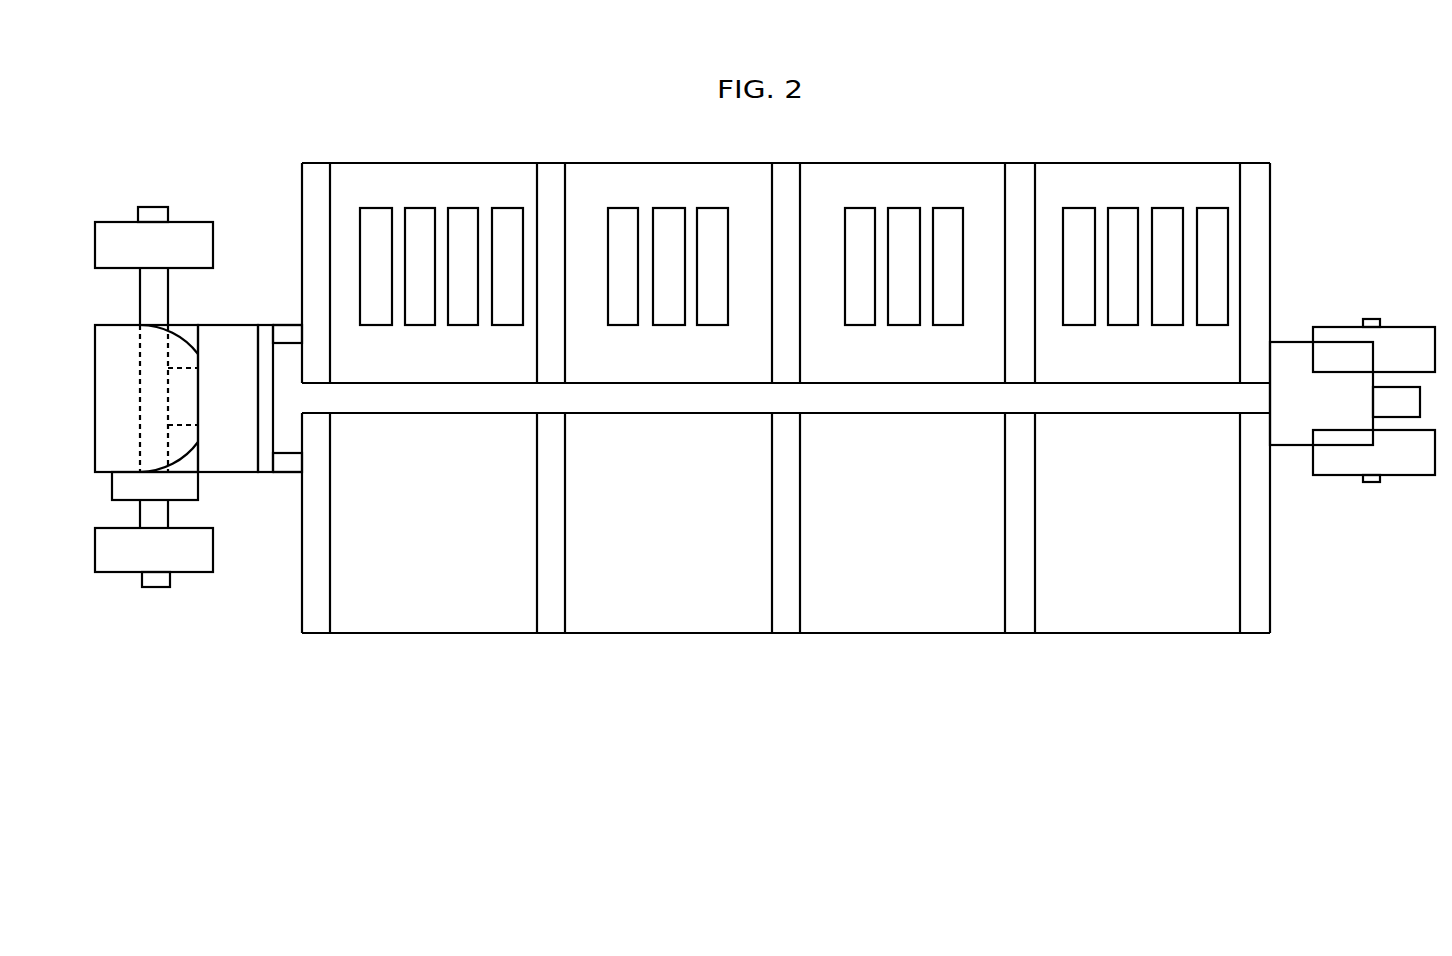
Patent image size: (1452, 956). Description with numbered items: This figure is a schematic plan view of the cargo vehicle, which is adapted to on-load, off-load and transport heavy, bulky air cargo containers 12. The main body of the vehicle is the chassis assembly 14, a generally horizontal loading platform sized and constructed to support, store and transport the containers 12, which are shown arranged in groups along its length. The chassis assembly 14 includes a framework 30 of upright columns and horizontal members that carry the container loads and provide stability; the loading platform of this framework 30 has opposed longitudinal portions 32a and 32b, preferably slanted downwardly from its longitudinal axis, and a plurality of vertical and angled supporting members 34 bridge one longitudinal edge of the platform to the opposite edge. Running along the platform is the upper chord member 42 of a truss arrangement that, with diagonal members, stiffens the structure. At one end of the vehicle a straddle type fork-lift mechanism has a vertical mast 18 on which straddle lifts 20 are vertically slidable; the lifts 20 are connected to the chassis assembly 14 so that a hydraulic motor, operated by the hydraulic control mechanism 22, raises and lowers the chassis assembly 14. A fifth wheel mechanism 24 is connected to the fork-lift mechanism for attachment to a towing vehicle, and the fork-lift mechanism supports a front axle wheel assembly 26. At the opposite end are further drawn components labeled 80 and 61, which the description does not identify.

The air cargo containers 12 is at (380, 213).
The chassis assembly 14 is at (843, 135).
The vertical mast 18 is at (217, 365).
The straddle lifts 20 is at (290, 343).
The hydraulic control mechanism 22 is at (187, 480).
The fifth wheel mechanism 24 is at (135, 360).
The front axle wheel assembly 26 is at (155, 192).
The framework 30 is at (975, 430).
The longitudinal portion 32a is at (690, 480).
The longitudinal portion 32b is at (690, 373).
The supporting members 34 is at (320, 565).
The upper chord member 42 is at (1053, 405).
The wheel assembly 61 is at (1424, 310).
The drive block 80 is at (1300, 312).